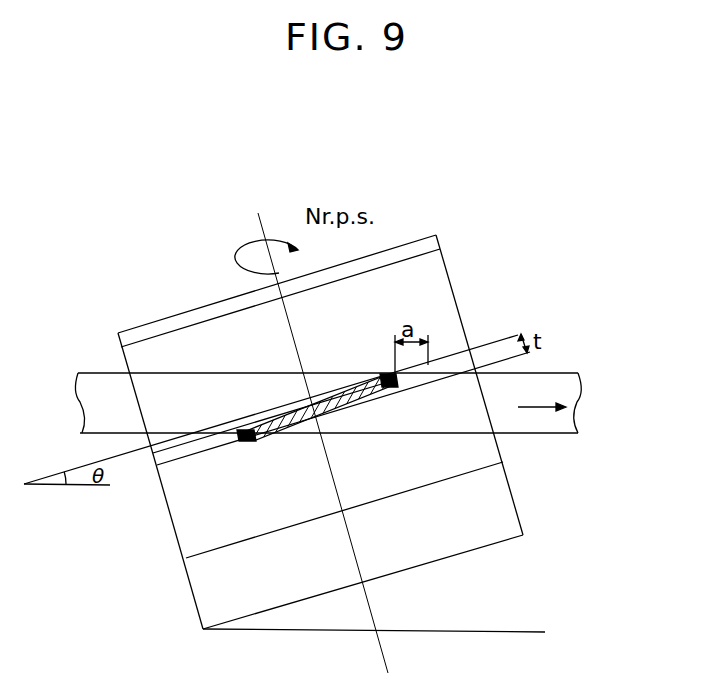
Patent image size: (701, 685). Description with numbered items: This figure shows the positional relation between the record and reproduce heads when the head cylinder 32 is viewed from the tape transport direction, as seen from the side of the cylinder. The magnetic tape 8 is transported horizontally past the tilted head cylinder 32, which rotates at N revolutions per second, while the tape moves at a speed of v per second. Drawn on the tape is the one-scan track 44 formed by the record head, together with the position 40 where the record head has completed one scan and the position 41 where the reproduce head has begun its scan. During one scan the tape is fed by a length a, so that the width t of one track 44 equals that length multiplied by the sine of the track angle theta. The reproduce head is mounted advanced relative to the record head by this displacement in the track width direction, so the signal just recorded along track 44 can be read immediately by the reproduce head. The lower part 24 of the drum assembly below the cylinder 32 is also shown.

The magnetic tape 8 is at (96, 373).
The lower (stationary) drum 24 is at (177, 537).
The head cylinder 32 is at (445, 267).
The position where the record head has completed one scan 40 is at (408, 386).
The position where the reproduce head has begun its scan 41 is at (247, 442).
The one-scan track 44 is at (270, 415).